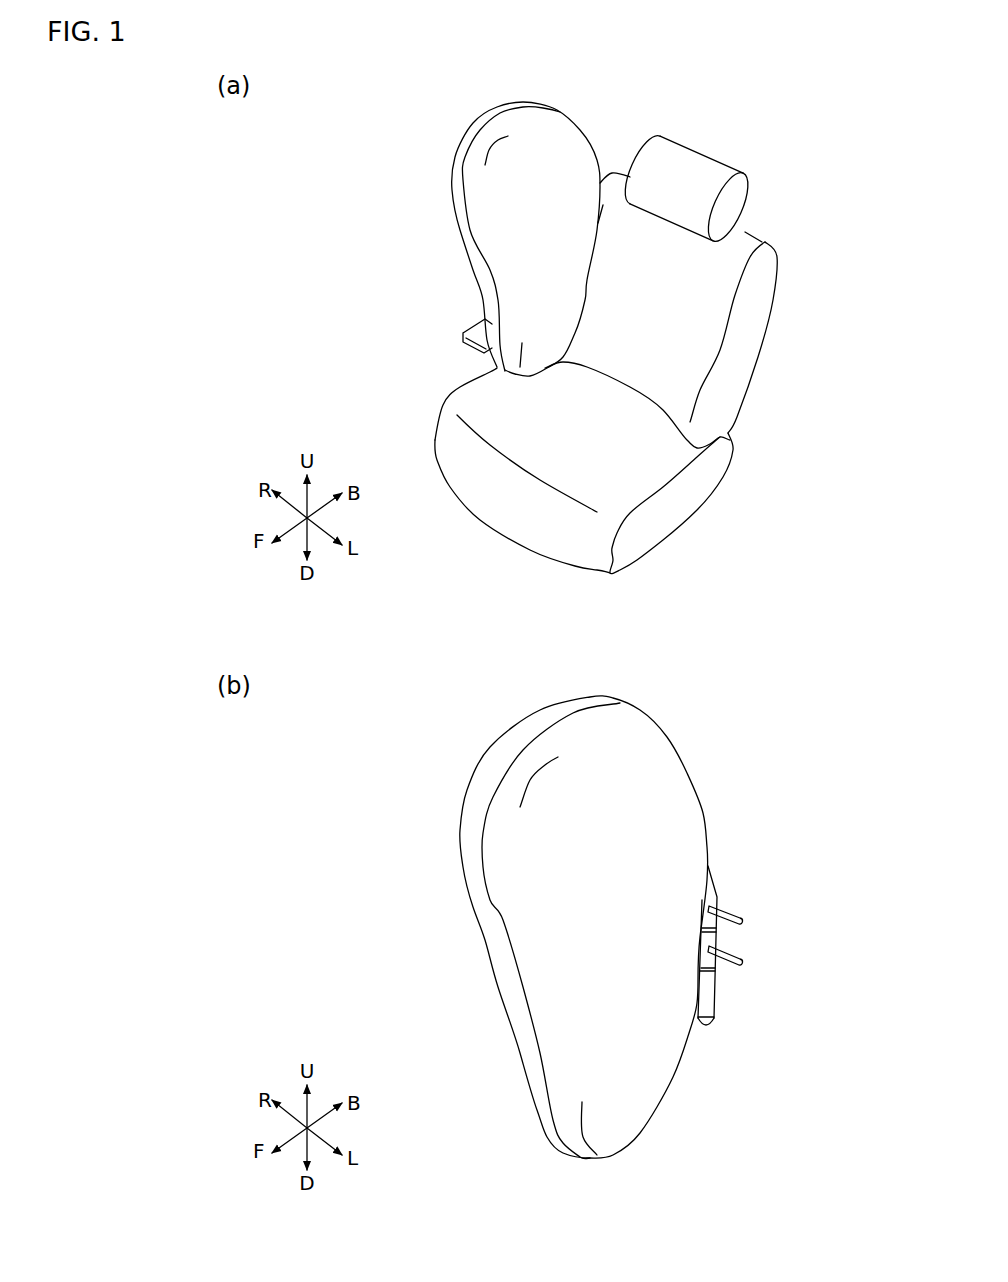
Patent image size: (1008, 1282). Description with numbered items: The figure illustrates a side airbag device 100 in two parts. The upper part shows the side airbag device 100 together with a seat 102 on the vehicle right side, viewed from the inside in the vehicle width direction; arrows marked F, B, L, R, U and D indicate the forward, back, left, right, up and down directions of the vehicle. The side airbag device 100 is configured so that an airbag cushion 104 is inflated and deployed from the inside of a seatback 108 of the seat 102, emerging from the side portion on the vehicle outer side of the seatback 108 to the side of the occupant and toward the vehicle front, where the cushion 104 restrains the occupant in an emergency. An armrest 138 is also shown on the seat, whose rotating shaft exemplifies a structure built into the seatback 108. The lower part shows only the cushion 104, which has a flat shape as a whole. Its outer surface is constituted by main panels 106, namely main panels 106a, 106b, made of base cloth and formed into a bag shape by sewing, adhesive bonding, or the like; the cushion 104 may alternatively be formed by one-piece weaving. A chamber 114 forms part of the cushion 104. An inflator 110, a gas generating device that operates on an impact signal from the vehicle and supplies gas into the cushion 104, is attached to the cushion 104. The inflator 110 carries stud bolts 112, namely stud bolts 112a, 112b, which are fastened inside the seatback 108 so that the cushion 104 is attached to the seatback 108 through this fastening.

The side airbag device 100 is at (335, 195).
The seat 102 is at (700, 161).
The airbag cushion 104 is at (550, 122).
The main panel 106 is at (403, 950).
The main panel 106a is at (565, 978).
The main panel 106b is at (487, 952).
The seatback 108 is at (750, 237).
The inflator 110 is at (715, 1023).
The stud bolts 112 is at (830, 915).
The stud bolt 112a is at (742, 921).
The stud bolt 112b is at (742, 963).
The chamber 114 is at (678, 777).
The armrest 138 is at (477, 323).